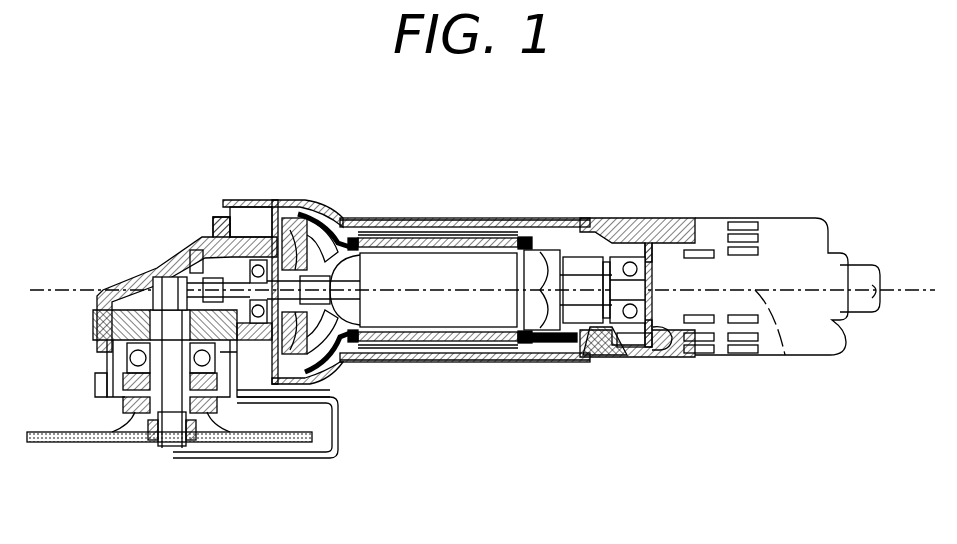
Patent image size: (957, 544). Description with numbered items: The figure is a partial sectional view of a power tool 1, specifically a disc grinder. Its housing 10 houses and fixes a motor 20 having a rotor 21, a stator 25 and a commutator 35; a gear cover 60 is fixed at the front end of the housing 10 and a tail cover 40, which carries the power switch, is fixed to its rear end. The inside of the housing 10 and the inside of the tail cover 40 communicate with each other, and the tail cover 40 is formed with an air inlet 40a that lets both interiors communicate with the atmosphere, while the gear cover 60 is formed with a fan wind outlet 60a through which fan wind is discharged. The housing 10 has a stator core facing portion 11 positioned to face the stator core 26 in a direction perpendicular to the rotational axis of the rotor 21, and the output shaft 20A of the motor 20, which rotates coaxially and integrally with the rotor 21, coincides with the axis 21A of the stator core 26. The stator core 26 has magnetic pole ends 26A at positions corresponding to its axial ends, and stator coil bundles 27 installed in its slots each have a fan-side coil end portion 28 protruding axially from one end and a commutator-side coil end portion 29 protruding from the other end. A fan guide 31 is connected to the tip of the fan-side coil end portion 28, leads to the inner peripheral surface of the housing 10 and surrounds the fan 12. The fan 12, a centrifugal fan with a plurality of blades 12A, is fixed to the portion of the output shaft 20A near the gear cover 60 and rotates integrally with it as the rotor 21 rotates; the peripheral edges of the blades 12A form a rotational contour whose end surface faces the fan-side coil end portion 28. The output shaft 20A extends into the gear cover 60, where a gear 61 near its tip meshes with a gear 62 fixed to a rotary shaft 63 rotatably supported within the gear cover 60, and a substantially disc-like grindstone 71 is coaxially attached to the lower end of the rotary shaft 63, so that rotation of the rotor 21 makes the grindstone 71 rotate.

The power tool 1 is at (750, 185).
The housing 10 is at (543, 358).
The stator core facing portion 11 is at (428, 362).
The fan 12 is at (335, 224).
The blades 12A is at (298, 248).
The motor 20 is at (525, 220).
The output shaft 20A is at (306, 199).
The rotor 21 is at (447, 318).
The axis 21A is at (787, 357).
The stator 25 is at (510, 358).
The stator core 26 is at (437, 222).
The magnetic pole ends 26A is at (345, 222).
The stator coil bundles 27 is at (352, 360).
The fan-side coil end portion 28 is at (352, 240).
The commutator-side coil end portion 29 is at (563, 357).
The fan guide 31 is at (318, 374).
The commutator 35 is at (587, 305).
The tail cover 40 is at (778, 243).
The air inlet 40a is at (740, 345).
The gear cover 60 is at (195, 238).
The fan wind outlet 60a is at (222, 212).
The gear 61 is at (245, 200).
The gear 62 is at (96, 300).
The rotary shaft 63 is at (170, 382).
The grindstone 71 is at (68, 444).